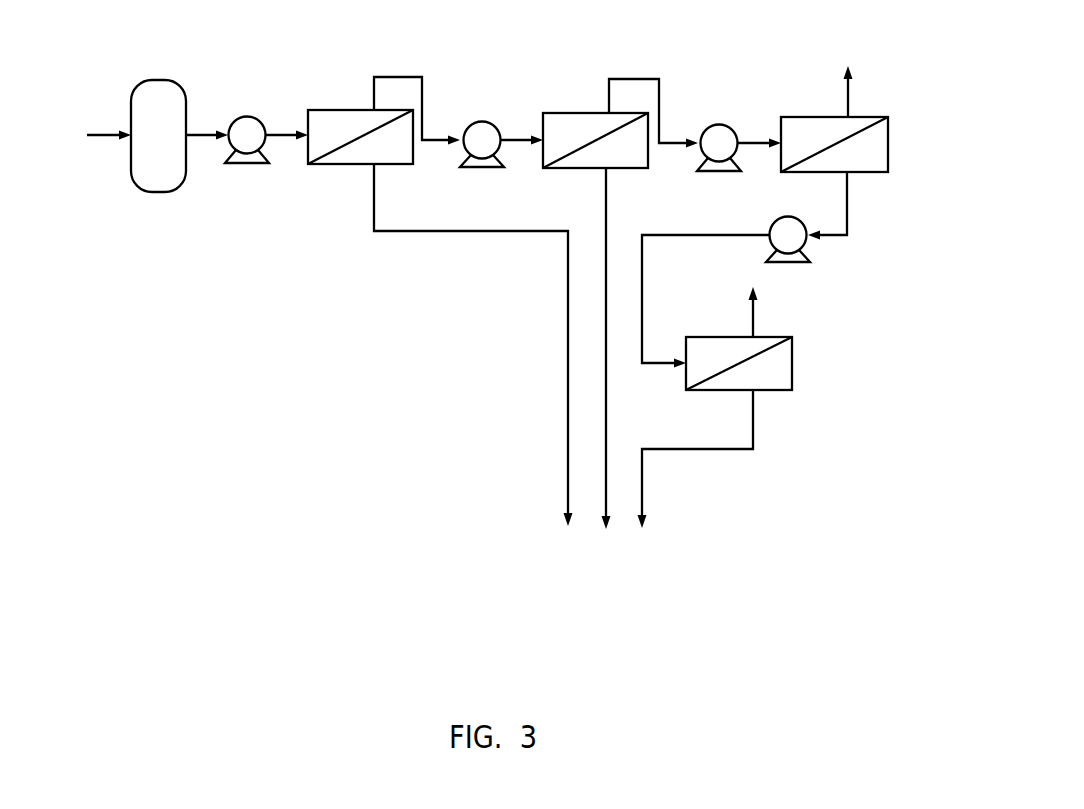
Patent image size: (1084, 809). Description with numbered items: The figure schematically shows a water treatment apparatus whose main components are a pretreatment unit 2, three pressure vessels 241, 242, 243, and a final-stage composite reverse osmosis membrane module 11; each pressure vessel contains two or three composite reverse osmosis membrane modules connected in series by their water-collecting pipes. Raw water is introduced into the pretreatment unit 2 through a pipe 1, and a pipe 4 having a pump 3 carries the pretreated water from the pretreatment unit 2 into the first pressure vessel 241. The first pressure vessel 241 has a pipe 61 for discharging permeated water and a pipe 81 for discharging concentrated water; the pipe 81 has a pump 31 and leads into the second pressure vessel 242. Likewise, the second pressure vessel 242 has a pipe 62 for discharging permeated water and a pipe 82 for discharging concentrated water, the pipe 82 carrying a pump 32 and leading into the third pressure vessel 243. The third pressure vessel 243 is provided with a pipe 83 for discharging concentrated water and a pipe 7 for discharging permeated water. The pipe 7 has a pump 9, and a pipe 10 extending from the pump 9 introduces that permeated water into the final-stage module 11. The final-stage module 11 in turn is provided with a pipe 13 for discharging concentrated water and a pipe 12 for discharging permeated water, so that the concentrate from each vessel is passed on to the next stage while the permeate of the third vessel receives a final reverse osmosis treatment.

The pipe 1 is at (100, 133).
The pretreatment unit 2 is at (160, 80).
The pump 3 is at (248, 117).
The pipe 4 is at (290, 138).
The first pressure vessel 241 is at (333, 110).
The pipe 81 is at (398, 77).
The pump 31 is at (481, 121).
The second pressure vessel 242 is at (570, 113).
The pipe 82 is at (633, 79).
The pump 32 is at (717, 124).
The third pressure vessel 243 is at (802, 117).
The pipe 83 is at (848, 102).
The pipe 7 is at (848, 197).
The pump 9 is at (771, 223).
The pipe 10 is at (703, 235).
The final-stage composite reverse osmosis membrane module 11 is at (793, 360).
The pipe 13 is at (753, 310).
The pipe 12 is at (753, 418).
The pipe 61 is at (427, 233).
The pipe 62 is at (607, 192).